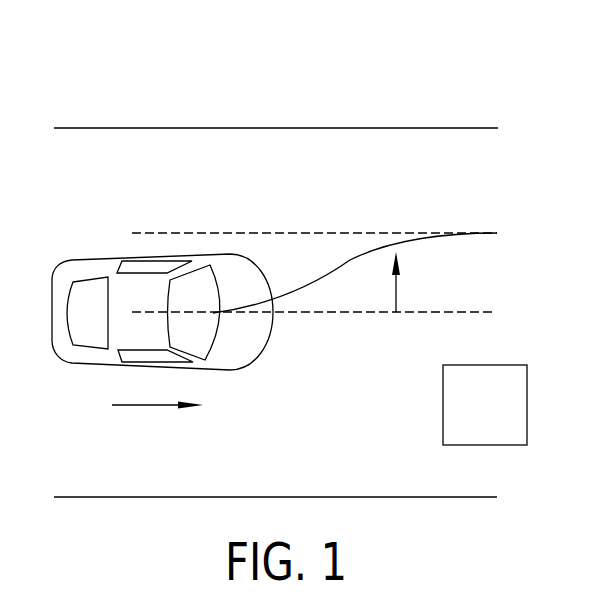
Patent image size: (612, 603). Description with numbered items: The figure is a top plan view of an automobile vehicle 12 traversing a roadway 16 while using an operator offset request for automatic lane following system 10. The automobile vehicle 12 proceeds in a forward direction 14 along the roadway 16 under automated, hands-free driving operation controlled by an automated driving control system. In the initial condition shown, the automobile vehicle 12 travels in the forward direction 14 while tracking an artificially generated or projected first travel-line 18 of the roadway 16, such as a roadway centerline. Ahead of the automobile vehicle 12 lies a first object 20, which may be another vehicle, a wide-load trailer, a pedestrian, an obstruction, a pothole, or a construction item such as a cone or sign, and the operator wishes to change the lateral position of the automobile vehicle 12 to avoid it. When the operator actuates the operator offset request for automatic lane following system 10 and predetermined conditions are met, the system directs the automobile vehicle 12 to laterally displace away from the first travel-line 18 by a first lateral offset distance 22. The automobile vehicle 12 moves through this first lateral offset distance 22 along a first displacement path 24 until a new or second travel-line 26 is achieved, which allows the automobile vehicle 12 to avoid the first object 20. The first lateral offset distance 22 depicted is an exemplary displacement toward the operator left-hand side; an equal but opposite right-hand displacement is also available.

The operator offset request for automatic lane following system 10 is at (527, 84).
The automobile vehicle 12 is at (107, 265).
The forward direction 14 is at (147, 405).
The roadway 16 is at (135, 145).
The first travel-line 18 is at (488, 312).
The first object 20 is at (475, 416).
The first lateral offset distance 22 is at (398, 293).
The first displacement path 24 is at (333, 272).
The second travel-line 26 is at (302, 233).